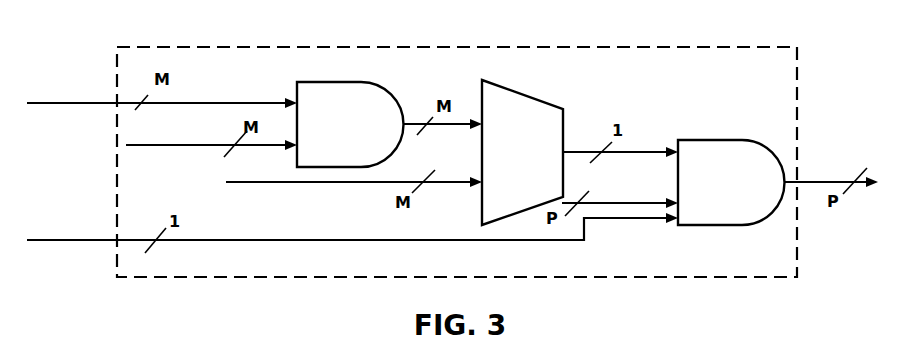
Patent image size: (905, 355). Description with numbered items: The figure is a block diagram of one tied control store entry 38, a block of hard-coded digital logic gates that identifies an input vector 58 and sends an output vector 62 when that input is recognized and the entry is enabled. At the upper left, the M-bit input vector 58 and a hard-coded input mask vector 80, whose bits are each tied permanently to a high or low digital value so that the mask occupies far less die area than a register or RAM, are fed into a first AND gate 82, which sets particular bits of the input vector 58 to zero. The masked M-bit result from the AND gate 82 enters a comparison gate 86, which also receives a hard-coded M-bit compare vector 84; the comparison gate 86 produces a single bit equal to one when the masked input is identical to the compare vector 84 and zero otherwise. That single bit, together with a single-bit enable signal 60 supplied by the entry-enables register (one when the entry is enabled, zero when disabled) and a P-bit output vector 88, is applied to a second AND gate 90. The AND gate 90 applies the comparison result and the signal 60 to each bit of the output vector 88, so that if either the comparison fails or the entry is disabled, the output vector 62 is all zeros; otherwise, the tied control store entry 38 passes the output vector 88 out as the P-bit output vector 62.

The tied control store entry 38 is at (685, 47).
The input vector 58 is at (38, 103).
The signal 60 is at (38, 240).
The output vector 62 is at (805, 182).
The input mask vector 80 is at (143, 145).
The AND gate 82 is at (350, 124).
The compare vector 84 is at (392, 182).
The comparison gate 86 is at (522, 152).
The output vector 88 is at (598, 203).
The AND gate 90 is at (731, 182).